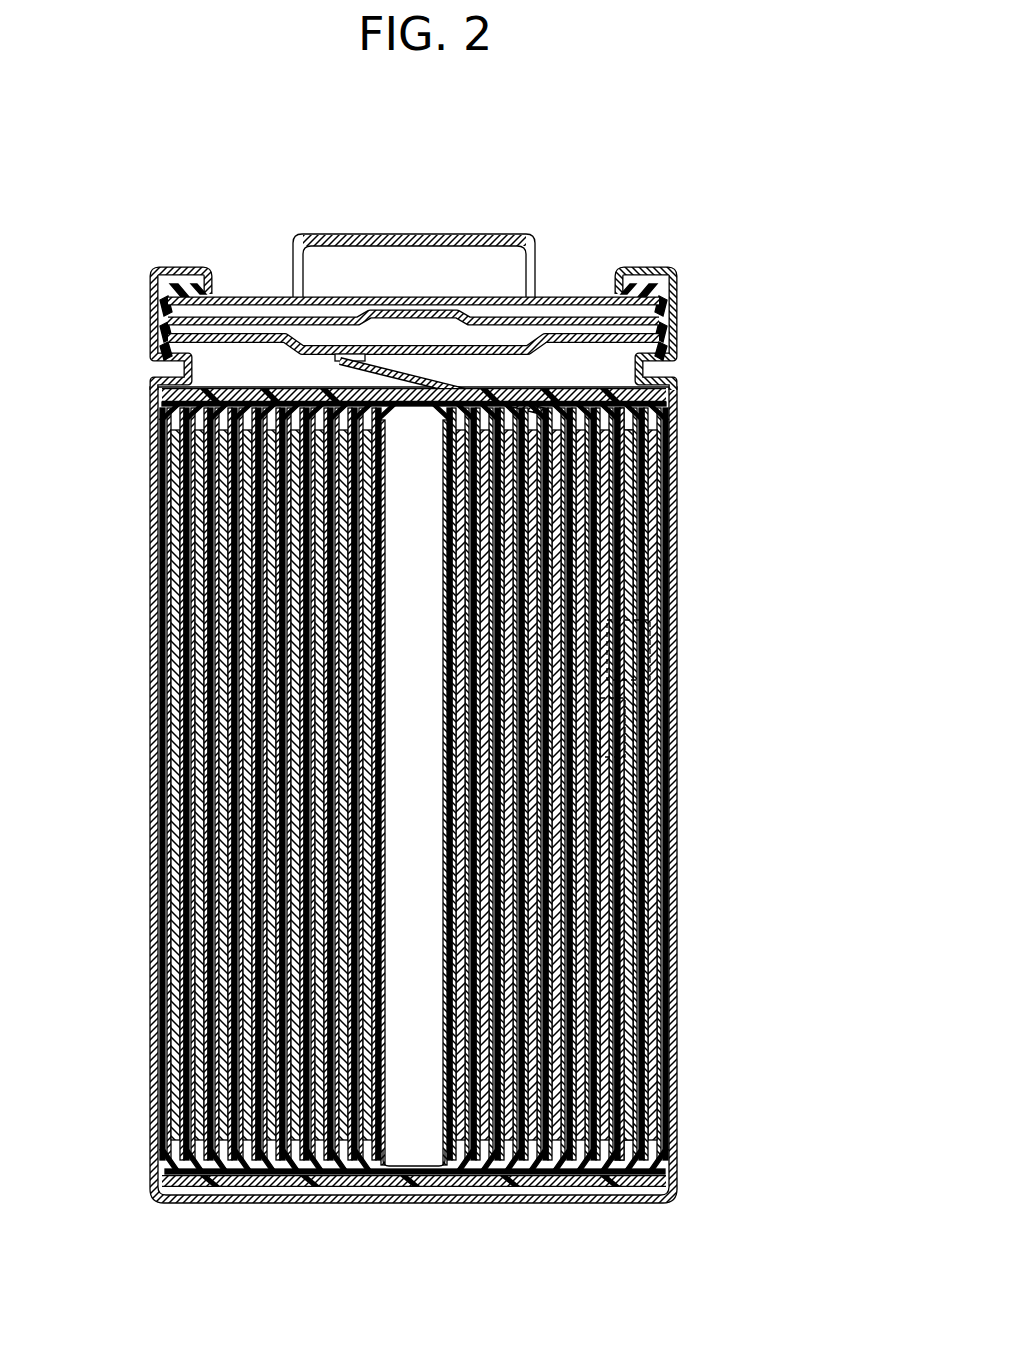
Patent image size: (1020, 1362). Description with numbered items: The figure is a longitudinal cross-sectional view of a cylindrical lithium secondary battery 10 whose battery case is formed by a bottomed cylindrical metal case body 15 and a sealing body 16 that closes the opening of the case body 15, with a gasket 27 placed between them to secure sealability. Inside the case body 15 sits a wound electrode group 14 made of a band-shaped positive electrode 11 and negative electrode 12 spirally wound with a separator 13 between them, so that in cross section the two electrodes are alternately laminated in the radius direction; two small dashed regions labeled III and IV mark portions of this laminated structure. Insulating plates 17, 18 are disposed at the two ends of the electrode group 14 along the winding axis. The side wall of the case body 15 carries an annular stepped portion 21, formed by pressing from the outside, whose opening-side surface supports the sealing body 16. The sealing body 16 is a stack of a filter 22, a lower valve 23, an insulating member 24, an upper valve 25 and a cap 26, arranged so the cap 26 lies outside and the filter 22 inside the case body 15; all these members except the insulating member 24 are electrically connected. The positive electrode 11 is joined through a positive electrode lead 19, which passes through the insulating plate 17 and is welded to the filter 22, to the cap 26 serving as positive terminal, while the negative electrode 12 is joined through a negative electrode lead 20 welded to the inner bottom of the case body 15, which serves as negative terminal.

The lithium secondary battery 10 is at (656, 127).
The positive electrode 11 is at (622, 906).
The negative electrode 12 is at (650, 921).
The separator 13 is at (640, 971).
The electrode group 14 is at (762, 882).
The case body 15 is at (677, 265).
The sealing body 16 is at (523, 222).
The insulating plate 17 is at (655, 396).
The insulating plate 18 is at (668, 1181).
The positive electrode lead 19 is at (420, 388).
The negative electrode lead 20 is at (185, 1170).
The stepped portion 21 is at (195, 392).
The filter 22 is at (424, 352).
The lower valve 23 is at (328, 322).
The insulating member 24 is at (233, 300).
The upper valve 25 is at (352, 300).
The cap 26 is at (487, 236).
The gasket 27 is at (663, 312).
The section III is at (652, 638).
The section IV is at (627, 712).